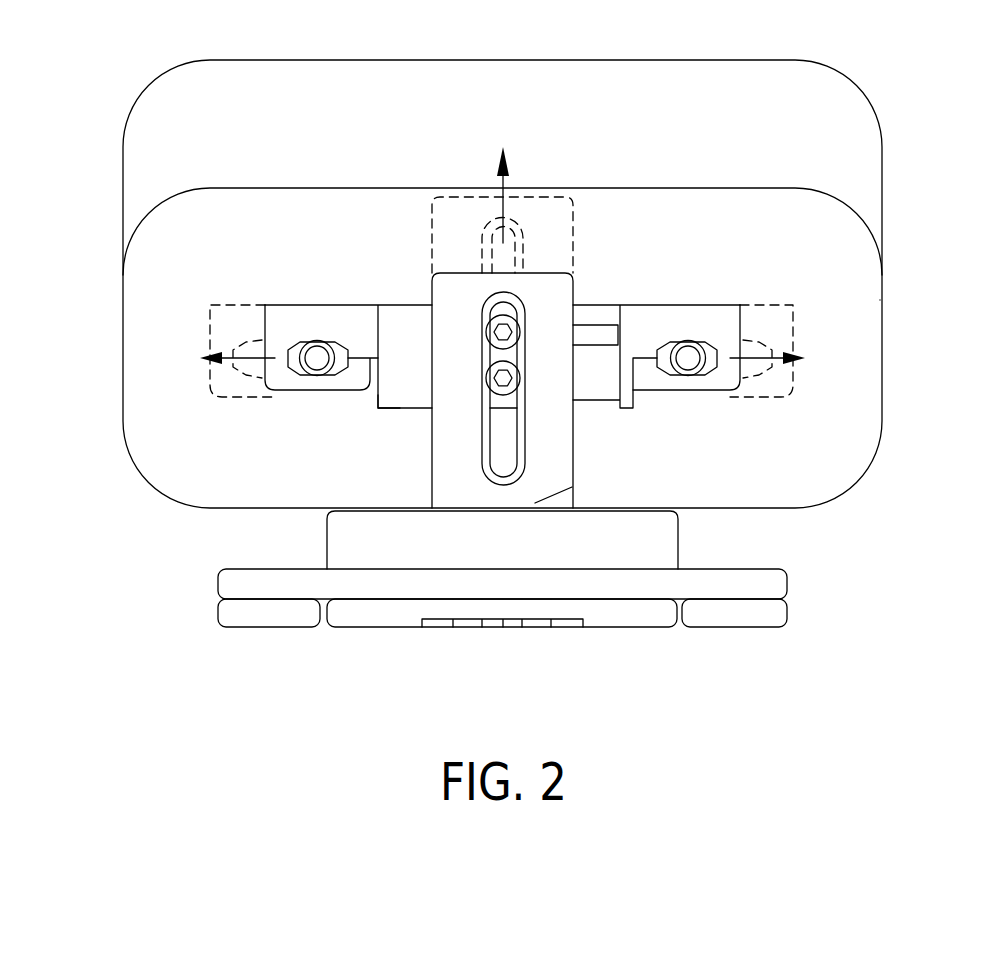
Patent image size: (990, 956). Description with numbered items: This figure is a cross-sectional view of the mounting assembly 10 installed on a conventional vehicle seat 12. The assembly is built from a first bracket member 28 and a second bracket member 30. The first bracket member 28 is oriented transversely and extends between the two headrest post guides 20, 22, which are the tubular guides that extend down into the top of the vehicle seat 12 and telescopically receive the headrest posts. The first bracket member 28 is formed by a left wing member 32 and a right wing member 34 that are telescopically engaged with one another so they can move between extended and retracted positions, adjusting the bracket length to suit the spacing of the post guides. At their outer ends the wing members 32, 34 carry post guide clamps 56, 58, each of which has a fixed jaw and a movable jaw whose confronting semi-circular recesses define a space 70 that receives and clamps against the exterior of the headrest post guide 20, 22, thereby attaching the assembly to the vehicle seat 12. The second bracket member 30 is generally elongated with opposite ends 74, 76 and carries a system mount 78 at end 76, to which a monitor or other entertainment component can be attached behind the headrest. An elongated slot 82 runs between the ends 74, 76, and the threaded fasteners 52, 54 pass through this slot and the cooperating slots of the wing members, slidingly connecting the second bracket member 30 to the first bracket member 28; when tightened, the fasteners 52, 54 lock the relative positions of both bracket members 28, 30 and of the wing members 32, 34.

The mounting assembly 10 is at (664, 144).
The vehicle seat 12 is at (882, 282).
The headrest post guide 20 is at (318, 345).
The headrest post guide 22 is at (688, 345).
The first bracket member 28 is at (400, 305).
The second bracket member 30 is at (572, 455).
The left wing member 32 is at (395, 400).
The right wing member 34 is at (607, 318).
The fastener 52 is at (512, 378).
The fastener 54 is at (492, 320).
The post guide clamp 56 is at (285, 307).
The post guide clamp 58 is at (710, 306).
The space 70 is at (288, 346).
The end 74 is at (552, 283).
The end 76 is at (572, 487).
The system mount 78 is at (653, 538).
The elongated slot 82 is at (500, 460).